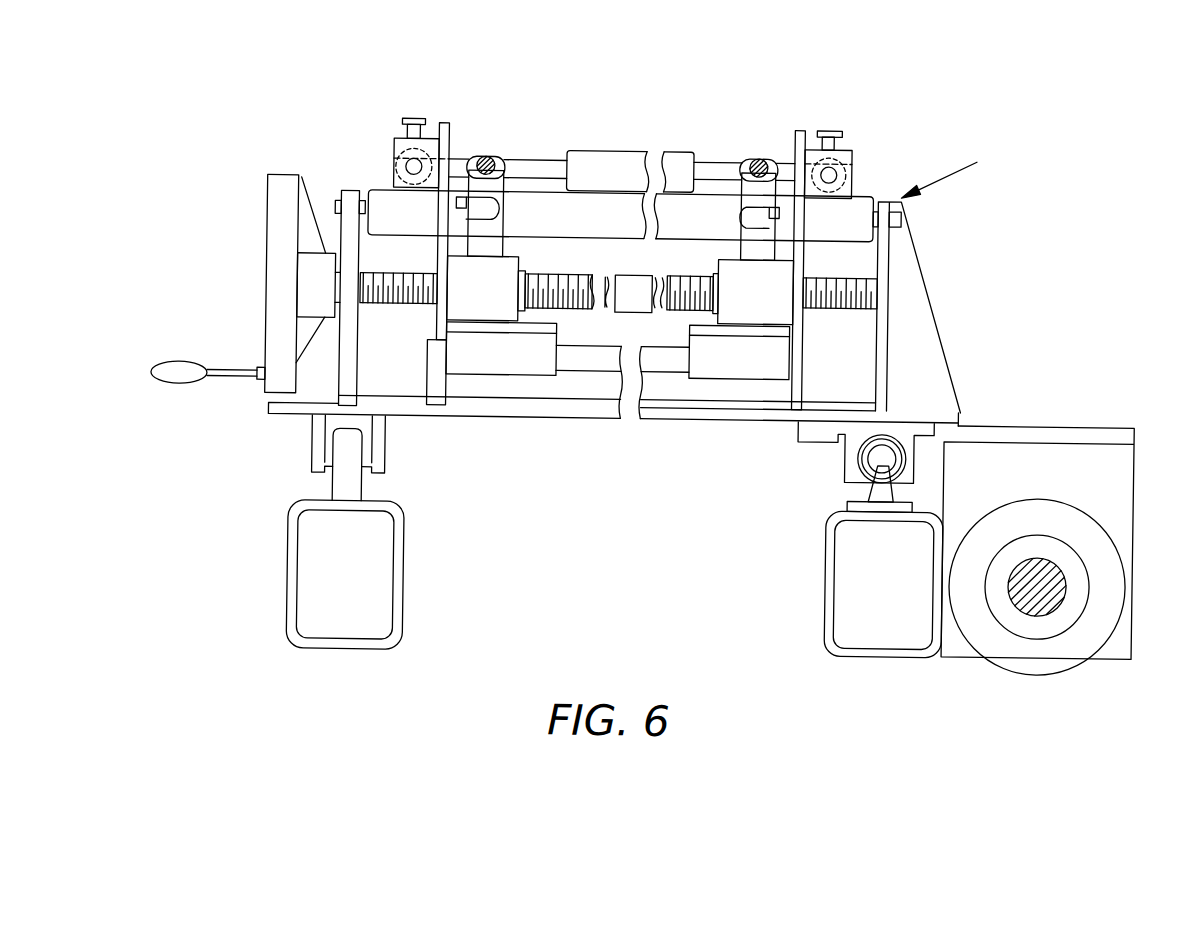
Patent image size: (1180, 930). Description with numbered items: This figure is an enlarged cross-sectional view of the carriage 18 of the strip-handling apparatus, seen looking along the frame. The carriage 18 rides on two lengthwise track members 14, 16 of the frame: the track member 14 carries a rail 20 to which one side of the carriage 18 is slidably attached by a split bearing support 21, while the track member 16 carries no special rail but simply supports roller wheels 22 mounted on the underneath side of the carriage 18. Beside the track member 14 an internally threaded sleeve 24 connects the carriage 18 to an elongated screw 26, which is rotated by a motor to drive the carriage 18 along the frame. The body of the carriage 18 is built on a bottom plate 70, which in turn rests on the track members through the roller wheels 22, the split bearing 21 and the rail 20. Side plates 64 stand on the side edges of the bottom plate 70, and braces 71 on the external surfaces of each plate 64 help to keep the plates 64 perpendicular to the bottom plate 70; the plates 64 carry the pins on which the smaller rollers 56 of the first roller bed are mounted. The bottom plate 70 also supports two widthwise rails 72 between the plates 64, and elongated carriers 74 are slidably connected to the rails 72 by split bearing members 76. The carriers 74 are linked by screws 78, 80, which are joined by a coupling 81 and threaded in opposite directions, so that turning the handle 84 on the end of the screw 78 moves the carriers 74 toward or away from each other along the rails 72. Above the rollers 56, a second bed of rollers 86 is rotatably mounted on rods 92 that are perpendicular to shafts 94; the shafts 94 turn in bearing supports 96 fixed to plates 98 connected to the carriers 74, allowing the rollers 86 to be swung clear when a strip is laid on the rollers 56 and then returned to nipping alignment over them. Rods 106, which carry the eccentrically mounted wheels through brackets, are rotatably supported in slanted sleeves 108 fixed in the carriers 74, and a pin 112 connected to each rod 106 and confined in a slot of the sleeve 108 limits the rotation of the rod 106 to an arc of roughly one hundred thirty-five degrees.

The track member 14 is at (832, 566).
The track member 16 is at (395, 575).
The carriage 18 is at (955, 174).
The rail 20 is at (878, 489).
The split bearing support 21 is at (850, 452).
The roller wheel 22 is at (352, 494).
The internally threaded sleeve 24 is at (1097, 530).
The elongated screw 26 is at (1065, 580).
The intermediate smaller roller 56 is at (857, 200).
The plate 64 is at (885, 220).
The bottom plate 70 is at (647, 412).
The brace 71 is at (918, 303).
The rail 72 is at (331, 216).
The elongated carrier 74 is at (590, 241).
The split bearing member 76 is at (697, 345).
The screw 78 is at (418, 306).
The screw 80 is at (817, 308).
The coupling 81 is at (622, 290).
The handle 84 is at (273, 243).
The roller 86 is at (678, 152).
The rod 92 is at (547, 162).
The shaft 94 is at (396, 160).
The bearing support 96 is at (452, 112).
The plate 98 is at (450, 126).
The rod 106 is at (490, 158).
The sleeve 108 is at (486, 233).
The pin 112 is at (460, 205).